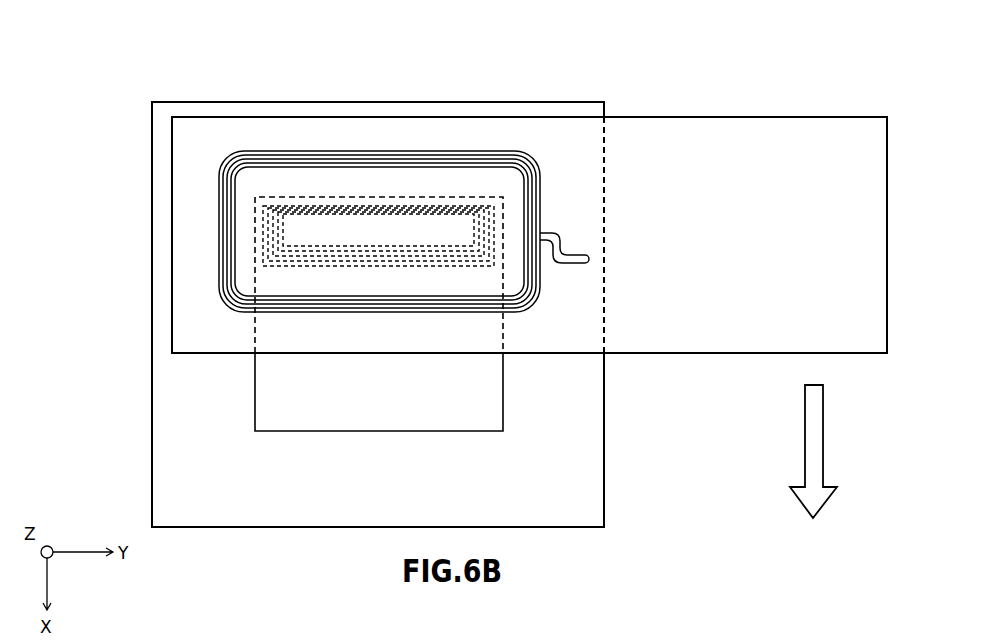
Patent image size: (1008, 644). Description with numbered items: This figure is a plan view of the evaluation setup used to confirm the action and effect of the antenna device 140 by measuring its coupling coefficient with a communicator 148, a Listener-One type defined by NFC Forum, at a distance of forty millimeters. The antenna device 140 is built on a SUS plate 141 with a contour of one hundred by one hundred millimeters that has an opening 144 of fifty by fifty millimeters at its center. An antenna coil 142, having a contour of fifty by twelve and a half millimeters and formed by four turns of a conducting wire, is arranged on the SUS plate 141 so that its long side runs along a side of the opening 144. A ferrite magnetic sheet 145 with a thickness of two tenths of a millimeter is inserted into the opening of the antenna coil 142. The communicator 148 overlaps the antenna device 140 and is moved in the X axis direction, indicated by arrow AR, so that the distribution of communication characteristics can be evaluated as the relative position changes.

The antenna device 140 is at (582, 536).
The SUS plate 141 is at (573, 461).
The antenna coil 142 is at (314, 256).
The opening 144 is at (460, 417).
The magnetic sheet 145 is at (387, 227).
The communicator 148 is at (678, 110).
The arrow AR is at (813, 447).